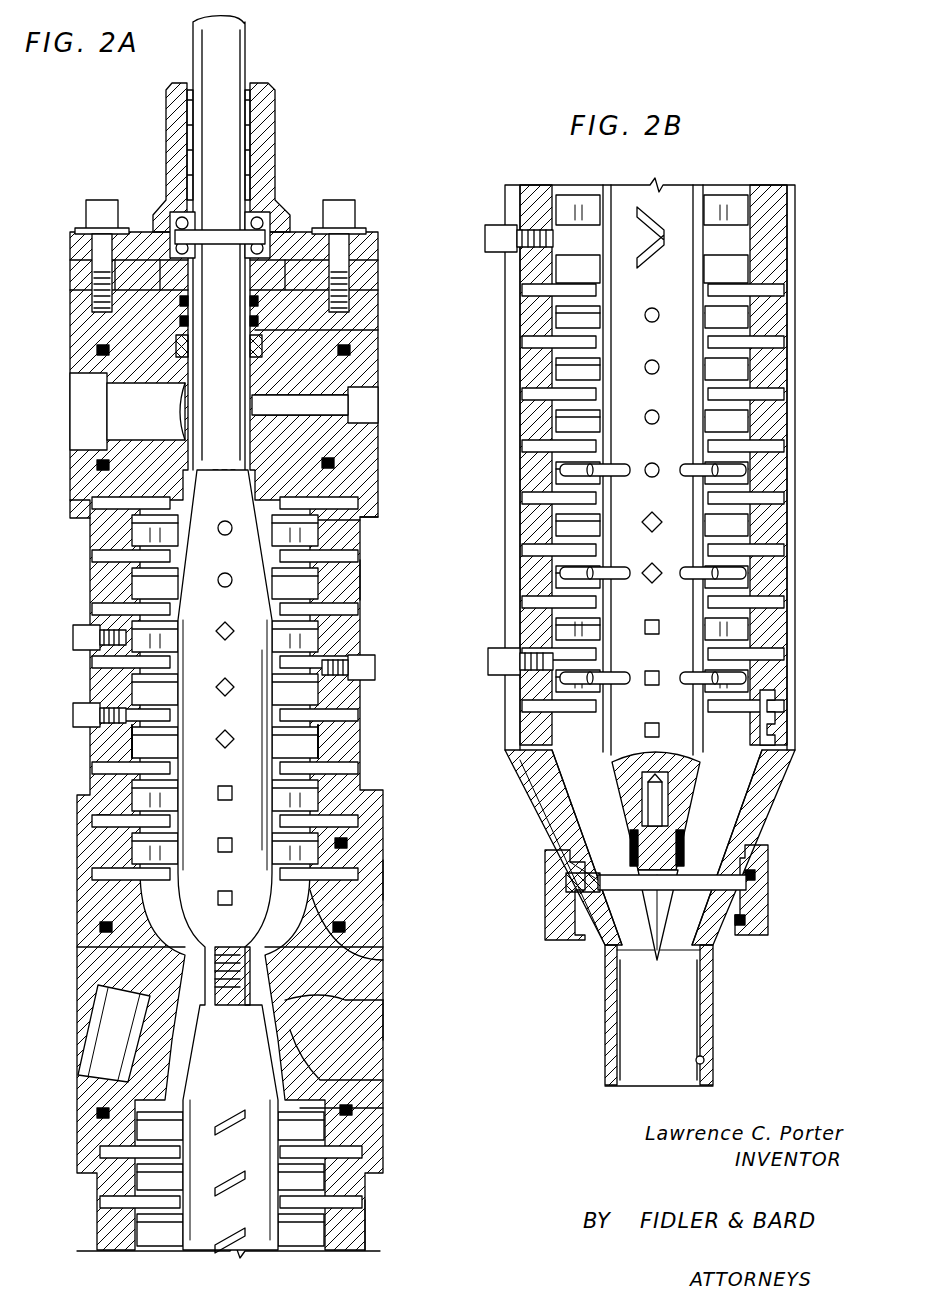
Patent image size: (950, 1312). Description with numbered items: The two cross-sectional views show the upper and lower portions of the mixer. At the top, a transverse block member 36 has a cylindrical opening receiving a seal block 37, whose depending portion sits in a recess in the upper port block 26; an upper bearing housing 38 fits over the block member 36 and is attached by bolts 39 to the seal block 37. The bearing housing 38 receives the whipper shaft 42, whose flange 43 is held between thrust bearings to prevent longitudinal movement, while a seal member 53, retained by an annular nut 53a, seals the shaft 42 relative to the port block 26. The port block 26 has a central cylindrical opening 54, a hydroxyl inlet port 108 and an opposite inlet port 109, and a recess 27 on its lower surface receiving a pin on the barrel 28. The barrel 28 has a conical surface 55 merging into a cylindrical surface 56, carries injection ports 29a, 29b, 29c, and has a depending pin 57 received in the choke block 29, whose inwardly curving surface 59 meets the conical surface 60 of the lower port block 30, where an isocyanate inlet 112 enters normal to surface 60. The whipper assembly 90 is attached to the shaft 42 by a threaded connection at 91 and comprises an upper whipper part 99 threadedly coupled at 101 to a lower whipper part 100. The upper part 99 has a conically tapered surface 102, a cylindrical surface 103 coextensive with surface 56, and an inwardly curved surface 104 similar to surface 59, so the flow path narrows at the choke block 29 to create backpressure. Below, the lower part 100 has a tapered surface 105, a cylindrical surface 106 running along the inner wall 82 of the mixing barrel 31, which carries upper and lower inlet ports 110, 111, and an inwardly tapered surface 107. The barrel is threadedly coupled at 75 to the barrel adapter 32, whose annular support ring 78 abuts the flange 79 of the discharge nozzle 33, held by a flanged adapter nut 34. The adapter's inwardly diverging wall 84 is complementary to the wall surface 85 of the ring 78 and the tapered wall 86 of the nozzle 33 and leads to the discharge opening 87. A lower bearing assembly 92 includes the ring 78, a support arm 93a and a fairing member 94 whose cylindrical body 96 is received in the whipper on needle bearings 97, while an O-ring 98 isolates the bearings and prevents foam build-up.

In FIG. 2A, the upper port block 26 is at (72, 360).
In FIG. 2A, the cylindrically shaped recess 27 is at (330, 462).
In FIG. 2A, the barrel 28 is at (362, 566).
In FIG. 2A, the choke block 29 is at (385, 888).
In FIG. 2A, the injection port 29a is at (82, 624).
In FIG. 2A, the injection port 29b is at (82, 728).
In FIG. 2A, the injection port 29c is at (376, 668).
In FIG. 2A, the lower port block 30 is at (385, 1018).
In FIG. 2A, the mixing barrel 31 is at (366, 1229).
In FIG. 2B, the mixing barrel 31 is at (790, 364).
In FIG. 2B, the barrel adapter 32 is at (745, 808).
In FIG. 2B, the discharge nozzle 33 is at (714, 1027).
In FIG. 2B, the flanged adapter nut 34 is at (752, 938).
In FIG. 2A, the transverse block member 36 is at (72, 273).
In FIG. 2A, the seal block 37 is at (72, 320).
In FIG. 2A, the upper bearing housing 38 is at (165, 116).
In FIG. 2A, the bolts 39 is at (85, 206).
In FIG. 2A, the whipper shaft 42 is at (245, 42).
In FIG. 2A, the flange 43 is at (265, 232).
In FIG. 2A, the seal member 53 is at (262, 314).
In FIG. 2A, the annular nut 53a is at (265, 368).
In FIG. 2A, the cylindrically shaped opening 54 is at (330, 432).
In FIG. 2A, the conical surface 55 is at (300, 538).
In FIG. 2A, the cylindrically shaped surface 56 is at (320, 640).
In FIG. 2A, the depending pin 57 is at (350, 846).
In FIG. 2A, the inwardly curving surface 59 is at (345, 920).
In FIG. 2A, the conical surface 60 is at (330, 1055).
In FIG. 2B, the threaded coupling 75 is at (778, 716).
In FIG. 2B, the annular support ring 78 is at (756, 875).
In FIG. 2B, the flange 79 is at (748, 920).
In FIG. 2A, the inner cylindrical wall 82 is at (320, 1178).
In FIG. 2B, the inner cylindrical wall 82 is at (748, 306).
In FIG. 2B, the inner wall surface 84 is at (770, 778).
In FIG. 2B, the wall surface 85 is at (722, 892).
In FIG. 2B, the tapered wall portion 86 is at (705, 920).
In FIG. 2B, the discharge opening 87 is at (704, 1062).
In FIG. 2A, the whipper assembly 90 is at (330, 1108).
In FIG. 2A, the threaded connection 91 is at (212, 485).
In FIG. 2B, the lower bearing assembly 92 is at (676, 832).
In FIG. 2B, the support arm 93a is at (566, 880).
In FIG. 2B, the fairing member 94 is at (640, 920).
In FIG. 2B, the body portion 96 is at (630, 850).
In FIG. 2B, the needle bearings 97 is at (664, 790).
In FIG. 2B, the O-ring 98 is at (700, 878).
In FIG. 2A, the upper whipper part 99 is at (228, 860).
In FIG. 2A, the lower whipper part 100 is at (234, 1176).
In FIG. 2B, the lower whipper part 100 is at (652, 417).
In FIG. 2A, the threaded coupling 101 is at (252, 966).
In FIG. 2A, the conically tapered outer surface 102 is at (290, 598).
In FIG. 2A, the cylindrical surface 103 is at (320, 735).
In FIG. 2A, the inwardly curved surface 104 is at (340, 942).
In FIG. 2A, the conically tapered surface 105 is at (330, 1030).
In FIG. 2A, the cylindrical surface 106 is at (300, 1152).
In FIG. 2B, the cylindrical surface 106 is at (770, 668).
In FIG. 2B, the inwardly tapered surface 107 is at (600, 800).
In FIG. 2A, the inlet port 108 is at (165, 398).
In FIG. 2A, the inlet port 109 is at (345, 404).
In FIG. 2B, the upper inlet port 110 is at (490, 254).
In FIG. 2B, the lower inlet port 111 is at (508, 677).
In FIG. 2A, the isocyanate inlet 112 is at (95, 1020).